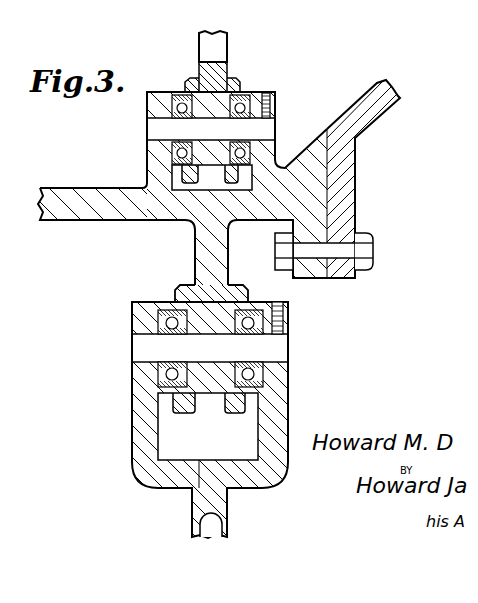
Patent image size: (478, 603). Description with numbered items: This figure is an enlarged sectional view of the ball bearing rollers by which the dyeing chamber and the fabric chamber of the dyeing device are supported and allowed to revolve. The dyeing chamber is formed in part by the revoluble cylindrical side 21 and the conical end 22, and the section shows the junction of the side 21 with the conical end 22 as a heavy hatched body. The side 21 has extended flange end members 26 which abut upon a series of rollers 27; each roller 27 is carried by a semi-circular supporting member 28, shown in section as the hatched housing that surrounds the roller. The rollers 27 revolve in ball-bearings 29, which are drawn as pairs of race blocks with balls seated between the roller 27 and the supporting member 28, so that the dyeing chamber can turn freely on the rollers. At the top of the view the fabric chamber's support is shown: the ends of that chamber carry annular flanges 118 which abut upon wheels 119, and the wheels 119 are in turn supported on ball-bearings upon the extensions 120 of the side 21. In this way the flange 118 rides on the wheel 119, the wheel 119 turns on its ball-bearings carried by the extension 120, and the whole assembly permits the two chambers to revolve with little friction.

The revoluble cylindrical side 21 is at (93, 212).
The conical end 22 is at (373, 126).
The extended flange end member 26 is at (203, 262).
The roller 27 is at (250, 292).
The semi-circular supporting member 28 is at (290, 405).
The ball-bearing 29 is at (172, 323).
The annular flange 118 is at (228, 66).
The wheel 119 is at (242, 87).
The extension 120 is at (281, 104).